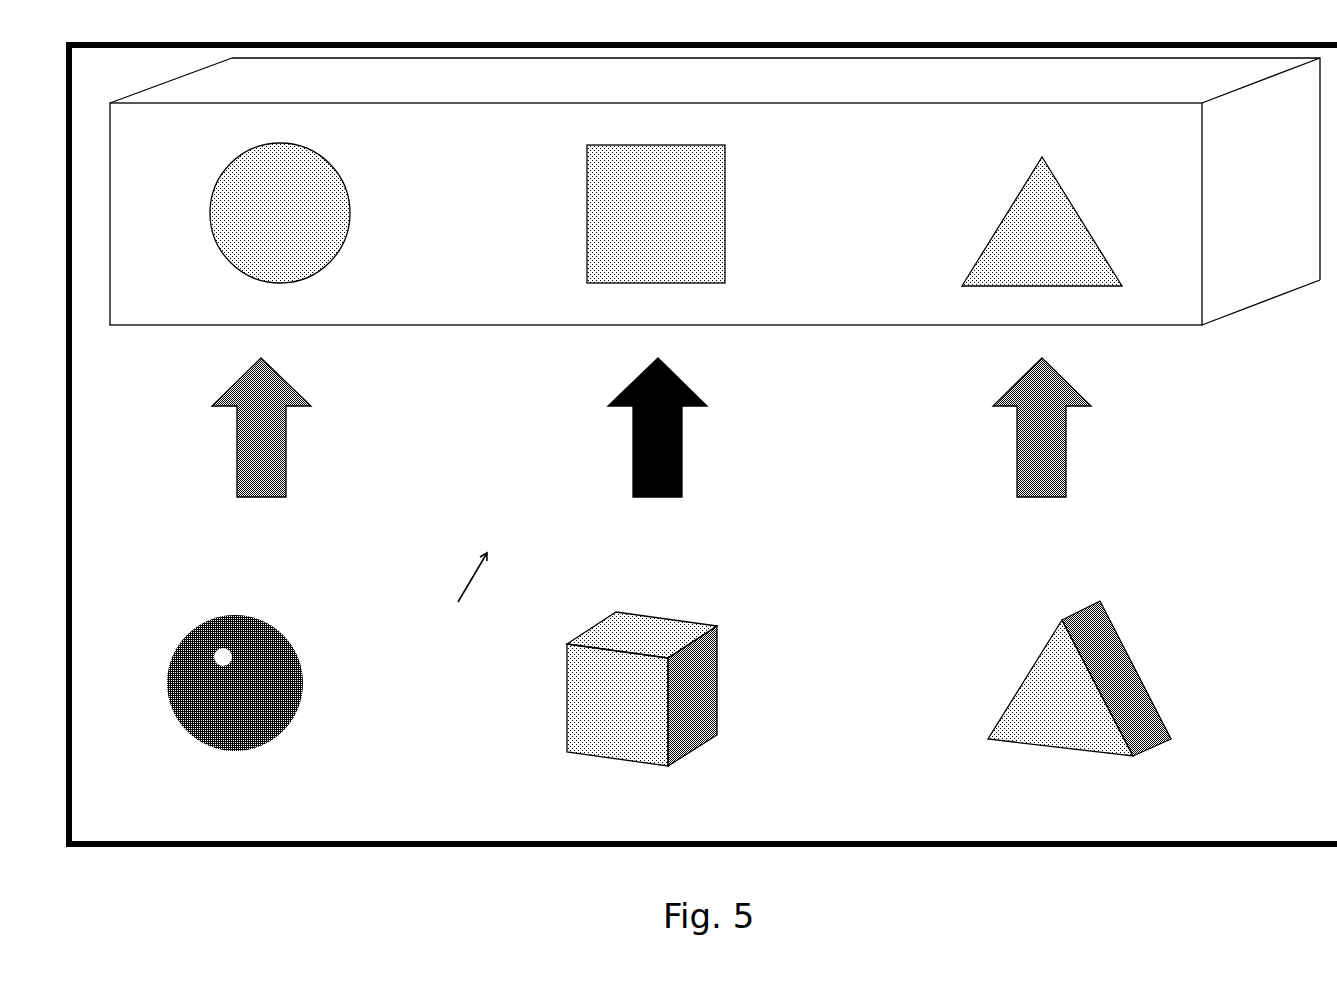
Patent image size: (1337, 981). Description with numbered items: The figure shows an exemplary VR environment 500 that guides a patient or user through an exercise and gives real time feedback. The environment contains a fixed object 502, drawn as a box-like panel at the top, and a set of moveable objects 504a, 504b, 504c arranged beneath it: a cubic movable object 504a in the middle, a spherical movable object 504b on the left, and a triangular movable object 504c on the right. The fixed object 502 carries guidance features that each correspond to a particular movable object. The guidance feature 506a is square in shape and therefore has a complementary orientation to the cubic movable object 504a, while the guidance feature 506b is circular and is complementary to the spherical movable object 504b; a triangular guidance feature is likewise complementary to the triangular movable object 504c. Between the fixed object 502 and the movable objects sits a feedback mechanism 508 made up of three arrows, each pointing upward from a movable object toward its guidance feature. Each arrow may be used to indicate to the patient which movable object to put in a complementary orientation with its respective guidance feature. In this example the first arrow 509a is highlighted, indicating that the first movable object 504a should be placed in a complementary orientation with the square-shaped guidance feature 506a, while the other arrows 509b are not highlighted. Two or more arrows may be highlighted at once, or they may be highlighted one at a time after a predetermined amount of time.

The VR environment 500 is at (213, 33).
The fixed object 502 is at (890, 372).
The cubic movable object 504a is at (588, 689).
The spherical movable object 504b is at (187, 688).
The triangular movable object 504c is at (1043, 689).
The square guidance feature 506a is at (605, 223).
The circular guidance feature 506b is at (235, 223).
The feedback mechanism 508 is at (455, 593).
The first arrow 509a is at (690, 457).
The second arrow 509b is at (328, 452).